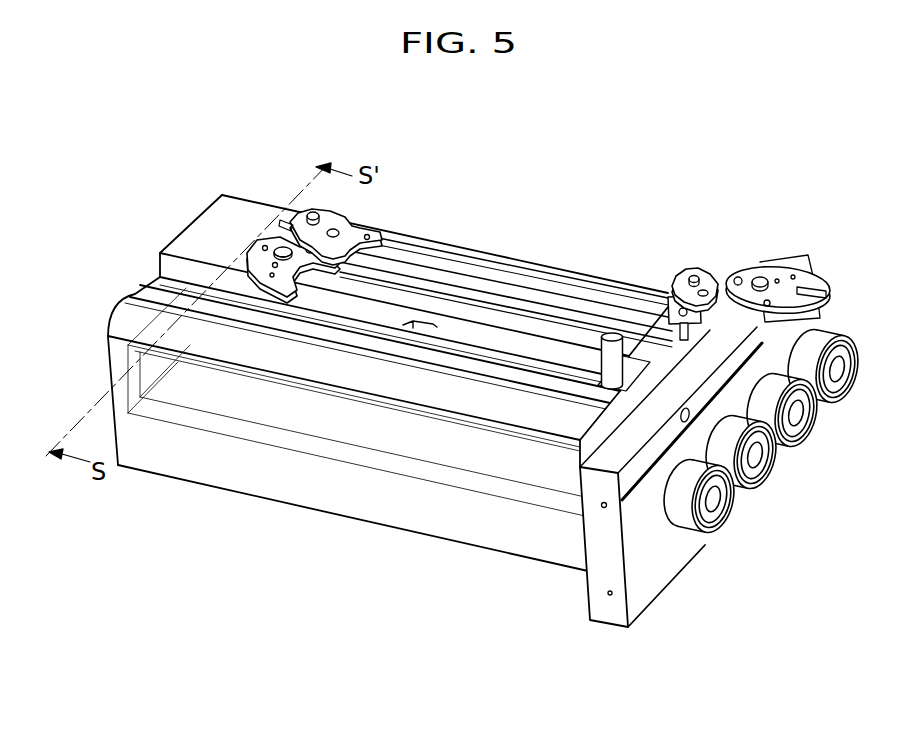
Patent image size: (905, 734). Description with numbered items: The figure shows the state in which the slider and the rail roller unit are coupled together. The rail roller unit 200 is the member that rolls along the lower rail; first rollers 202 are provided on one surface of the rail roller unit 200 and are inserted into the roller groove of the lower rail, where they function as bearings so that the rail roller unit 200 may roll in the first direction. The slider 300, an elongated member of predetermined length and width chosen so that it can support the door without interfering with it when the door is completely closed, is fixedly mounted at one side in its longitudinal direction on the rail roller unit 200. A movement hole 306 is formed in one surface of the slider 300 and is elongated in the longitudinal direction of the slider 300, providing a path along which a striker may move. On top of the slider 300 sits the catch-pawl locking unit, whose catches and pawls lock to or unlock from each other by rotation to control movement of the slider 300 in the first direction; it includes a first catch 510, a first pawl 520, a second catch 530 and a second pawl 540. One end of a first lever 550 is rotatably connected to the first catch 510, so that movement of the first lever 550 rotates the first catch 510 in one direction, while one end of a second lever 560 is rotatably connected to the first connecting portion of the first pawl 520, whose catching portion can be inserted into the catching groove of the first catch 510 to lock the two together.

The rail roller unit 200 is at (607, 607).
The first rollers 202 is at (757, 450).
The slider 300 is at (248, 467).
The movement hole 306 is at (402, 327).
The first catch 510 is at (778, 268).
The first pawl 520 is at (690, 270).
The second catch 530 is at (273, 238).
The second pawl 540 is at (332, 215).
The first lever 550 is at (422, 260).
The second lever 560 is at (543, 310).